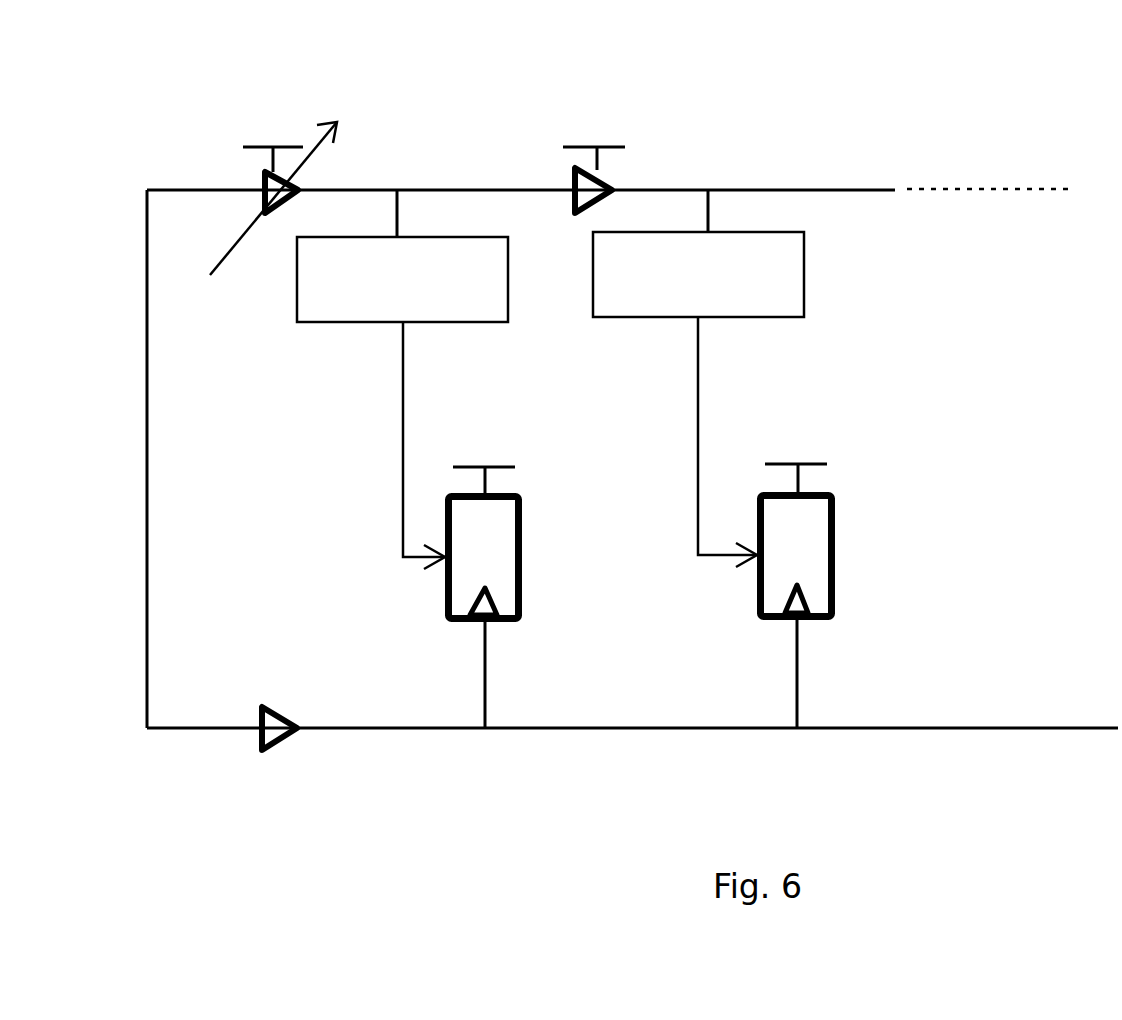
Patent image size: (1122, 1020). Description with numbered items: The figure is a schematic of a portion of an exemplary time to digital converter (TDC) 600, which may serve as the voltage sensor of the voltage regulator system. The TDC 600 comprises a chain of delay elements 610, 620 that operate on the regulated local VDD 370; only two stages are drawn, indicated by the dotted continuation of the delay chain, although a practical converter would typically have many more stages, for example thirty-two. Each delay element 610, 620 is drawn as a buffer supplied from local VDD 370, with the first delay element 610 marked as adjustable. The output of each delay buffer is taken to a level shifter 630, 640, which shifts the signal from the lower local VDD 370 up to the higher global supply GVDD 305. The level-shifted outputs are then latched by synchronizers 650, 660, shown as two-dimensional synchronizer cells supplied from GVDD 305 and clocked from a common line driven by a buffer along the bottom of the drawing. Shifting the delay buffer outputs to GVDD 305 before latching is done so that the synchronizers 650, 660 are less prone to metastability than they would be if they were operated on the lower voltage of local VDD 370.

The time to digital converter 600 is at (840, 46).
The regulated local VDD 370 is at (420, 140).
The global voltage GVDD 305 is at (649, 461).
The delay element 610 is at (255, 203).
The delay element 620 is at (572, 200).
The level shifter 630 is at (356, 273).
The level shifter 640 is at (666, 273).
The synchronizer 650 is at (523, 572).
The synchronizer 660 is at (842, 572).